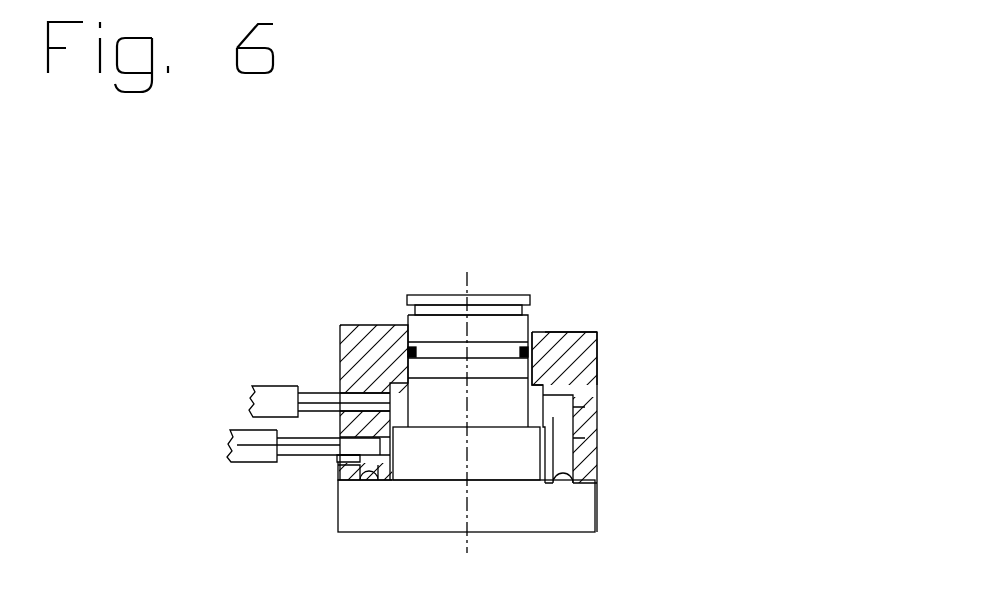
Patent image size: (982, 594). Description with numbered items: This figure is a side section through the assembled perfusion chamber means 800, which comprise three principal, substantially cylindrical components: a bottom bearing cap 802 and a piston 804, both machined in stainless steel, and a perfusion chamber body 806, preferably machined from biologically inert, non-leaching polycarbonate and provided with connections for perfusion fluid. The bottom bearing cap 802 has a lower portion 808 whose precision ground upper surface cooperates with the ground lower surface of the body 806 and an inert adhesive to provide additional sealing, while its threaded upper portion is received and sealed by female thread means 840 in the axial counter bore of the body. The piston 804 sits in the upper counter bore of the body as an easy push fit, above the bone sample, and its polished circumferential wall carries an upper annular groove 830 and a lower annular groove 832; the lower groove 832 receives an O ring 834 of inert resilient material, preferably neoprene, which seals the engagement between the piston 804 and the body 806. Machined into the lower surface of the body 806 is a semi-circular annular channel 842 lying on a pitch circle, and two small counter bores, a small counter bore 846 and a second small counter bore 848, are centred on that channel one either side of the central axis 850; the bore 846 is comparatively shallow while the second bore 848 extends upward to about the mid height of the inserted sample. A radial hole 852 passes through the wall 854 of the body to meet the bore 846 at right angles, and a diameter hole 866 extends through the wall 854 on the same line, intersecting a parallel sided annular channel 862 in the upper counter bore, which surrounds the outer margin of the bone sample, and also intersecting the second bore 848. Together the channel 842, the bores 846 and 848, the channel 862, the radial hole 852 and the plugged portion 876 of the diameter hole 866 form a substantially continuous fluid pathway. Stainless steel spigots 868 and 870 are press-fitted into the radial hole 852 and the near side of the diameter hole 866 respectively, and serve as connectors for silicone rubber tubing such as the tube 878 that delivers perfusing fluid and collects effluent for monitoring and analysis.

The perfusion chamber means 800 is at (468, 162).
The bottom bearing cap 802 is at (597, 505).
The piston 804 is at (522, 328).
The perfusion chamber body 806 is at (597, 333).
The lower portion of bottom bearing cap 808 is at (508, 510).
The upper annular groove 830 is at (410, 314).
The lower annular groove 832 is at (540, 332).
The O ring 834 is at (580, 332).
The female thread means 840 is at (597, 467).
The annular channel 842 is at (342, 463).
The small counter bore 846 is at (337, 465).
The second small counter bore 848 is at (597, 442).
The central axis 850 is at (468, 285).
The radial hole 852 is at (337, 461).
The wall 854 is at (597, 362).
The annular channel 862 is at (597, 385).
The diameter hole 866 is at (597, 405).
The spigot 868 is at (268, 391).
The spigot 870 is at (233, 430).
The plugged portion of diameter hole 876 is at (268, 386).
The tube 878 is at (237, 445).